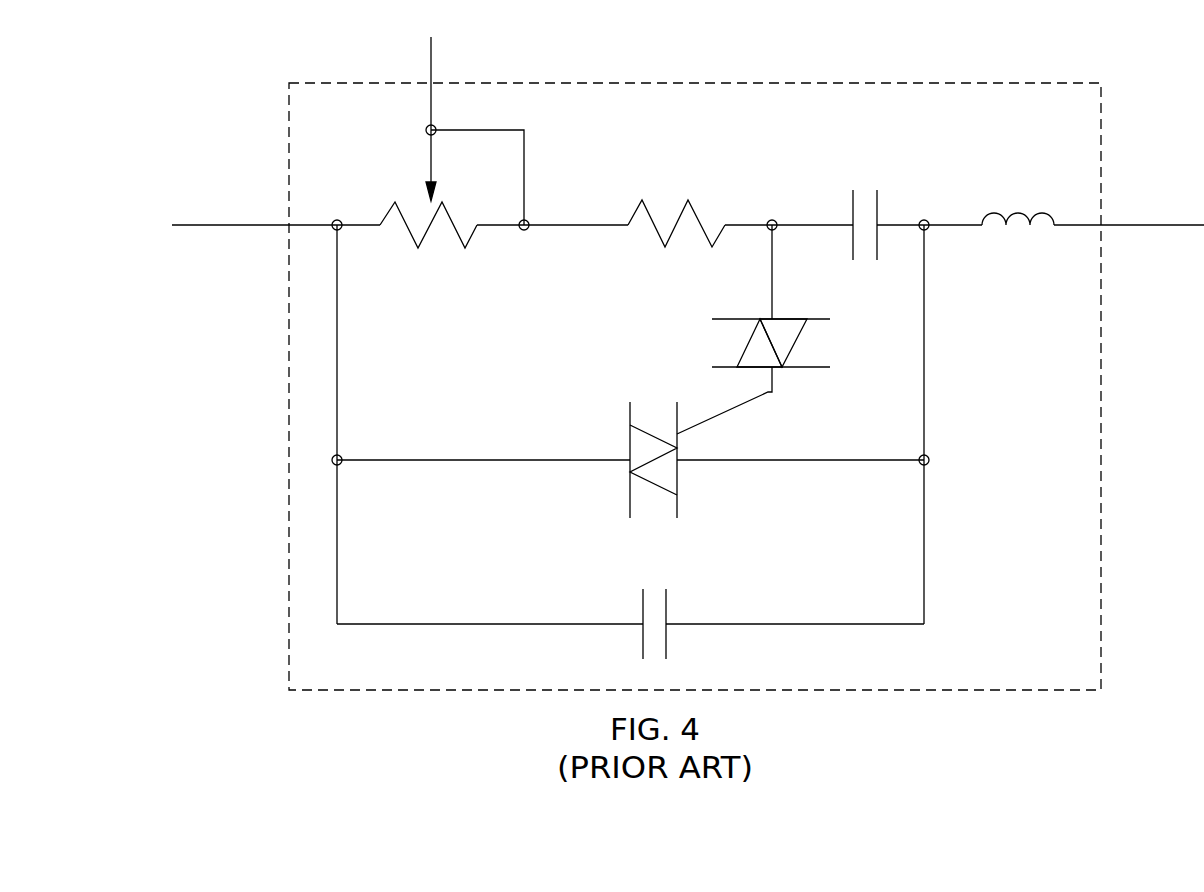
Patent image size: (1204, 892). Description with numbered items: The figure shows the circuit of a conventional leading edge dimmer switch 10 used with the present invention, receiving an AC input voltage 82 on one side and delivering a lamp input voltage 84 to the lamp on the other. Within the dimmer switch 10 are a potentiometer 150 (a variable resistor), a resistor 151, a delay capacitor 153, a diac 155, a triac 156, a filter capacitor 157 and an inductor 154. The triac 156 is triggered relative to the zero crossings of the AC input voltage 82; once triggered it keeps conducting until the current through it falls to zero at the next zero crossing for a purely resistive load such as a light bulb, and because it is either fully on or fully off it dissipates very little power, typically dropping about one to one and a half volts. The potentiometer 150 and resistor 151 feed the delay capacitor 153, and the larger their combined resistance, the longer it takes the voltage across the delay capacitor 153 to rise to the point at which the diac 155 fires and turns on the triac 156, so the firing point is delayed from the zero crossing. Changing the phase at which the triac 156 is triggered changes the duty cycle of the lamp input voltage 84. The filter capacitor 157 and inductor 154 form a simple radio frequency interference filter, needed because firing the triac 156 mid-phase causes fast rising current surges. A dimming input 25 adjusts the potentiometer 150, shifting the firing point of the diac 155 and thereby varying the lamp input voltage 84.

The dimmer switch 10 is at (314, 83).
The dimming input 25 is at (464, 17).
The AC input voltage 82 is at (209, 225).
The lamp input voltage 84 is at (1150, 225).
The potentiometer 150 is at (427, 233).
The resistor 151 is at (689, 205).
The delay capacitor 153 is at (877, 200).
The inductor 154 is at (1020, 212).
The diac 155 is at (738, 319).
The triac 156 is at (630, 408).
The filter capacitor 157 is at (666, 598).